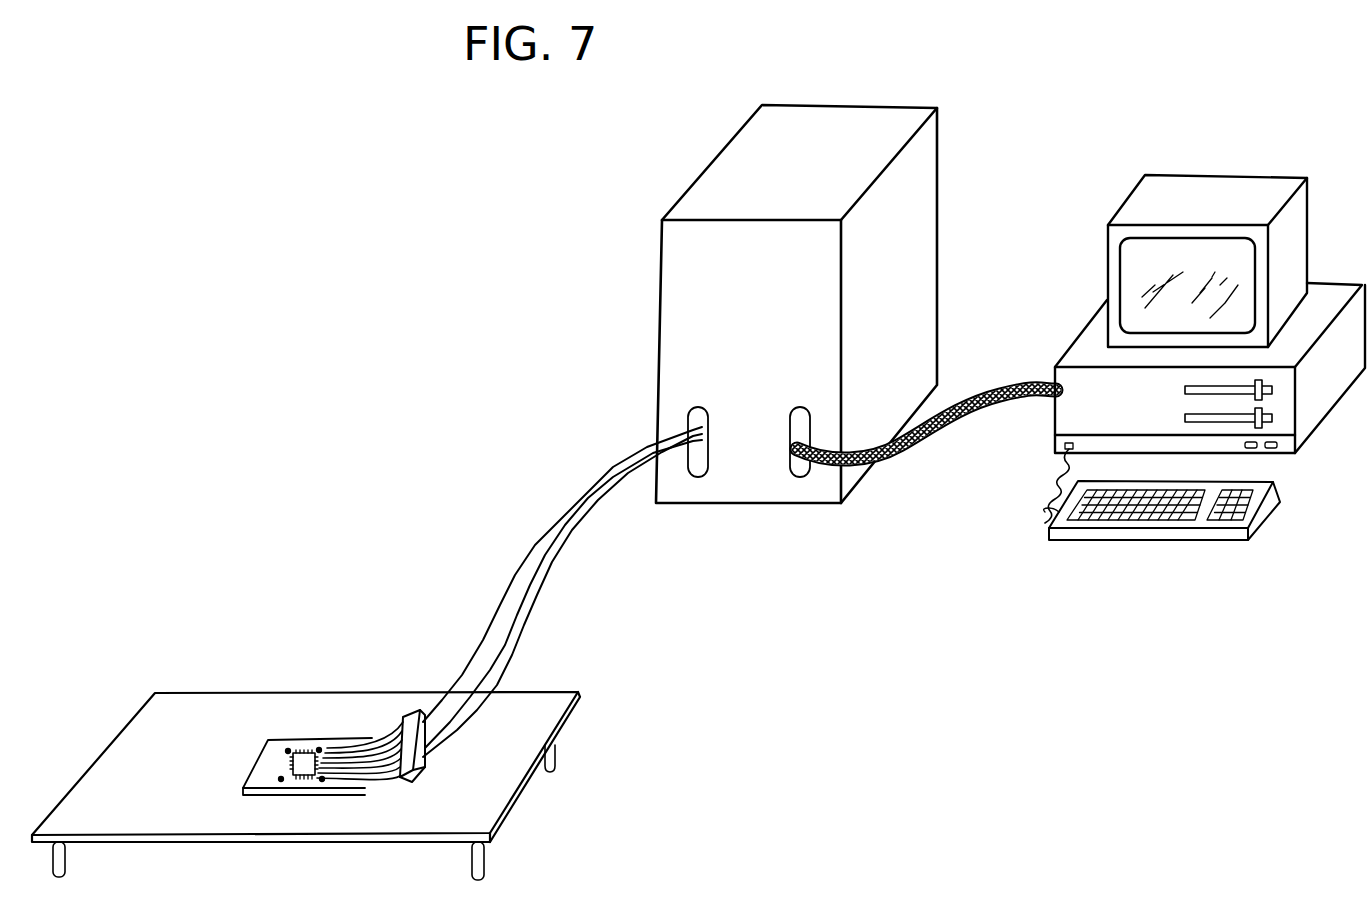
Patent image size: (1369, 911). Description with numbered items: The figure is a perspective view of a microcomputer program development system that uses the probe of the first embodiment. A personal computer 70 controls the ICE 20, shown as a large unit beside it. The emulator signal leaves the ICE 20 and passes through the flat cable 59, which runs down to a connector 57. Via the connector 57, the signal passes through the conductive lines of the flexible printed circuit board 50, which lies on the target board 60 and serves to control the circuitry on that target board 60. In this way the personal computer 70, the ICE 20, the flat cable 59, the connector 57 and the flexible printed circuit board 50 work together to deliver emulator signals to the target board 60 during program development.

The ICE 20 is at (925, 172).
The personal computer 70 is at (1105, 258).
The flat cable 59 is at (530, 545).
The flexible printed circuit board 50 is at (345, 738).
The connector 57 is at (415, 713).
The target board 60 is at (318, 820).